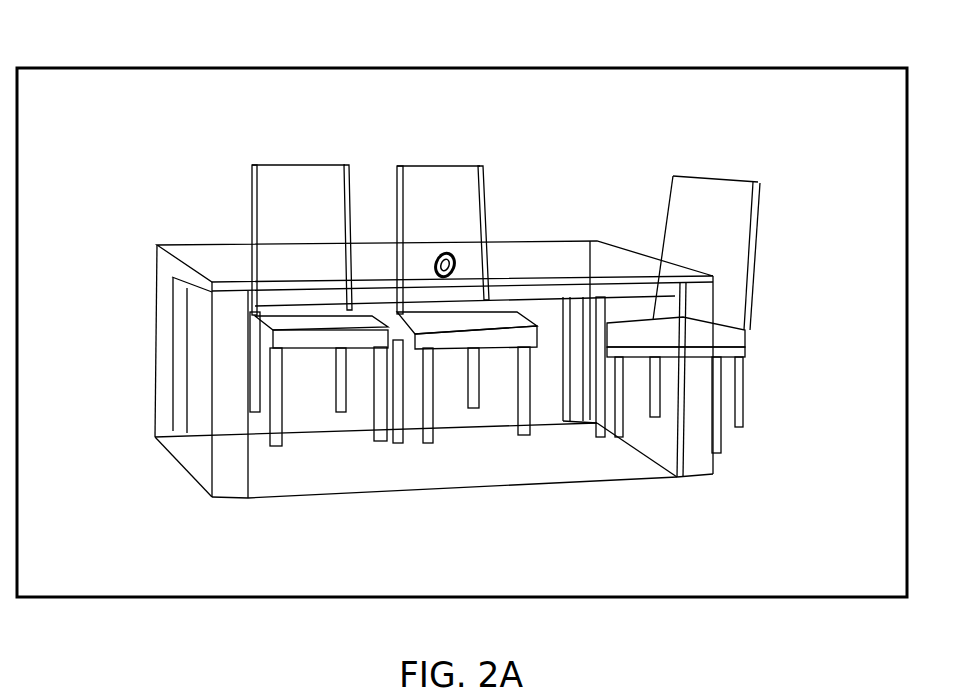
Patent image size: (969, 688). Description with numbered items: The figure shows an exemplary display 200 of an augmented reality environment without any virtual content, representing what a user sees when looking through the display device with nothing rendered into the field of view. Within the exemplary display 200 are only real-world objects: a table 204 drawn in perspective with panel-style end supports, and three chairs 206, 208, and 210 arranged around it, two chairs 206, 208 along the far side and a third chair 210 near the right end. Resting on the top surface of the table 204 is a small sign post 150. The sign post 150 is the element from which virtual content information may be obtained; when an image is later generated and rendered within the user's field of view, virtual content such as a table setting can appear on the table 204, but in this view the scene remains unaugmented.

The exemplary display 200 is at (162, 67).
The table 204 is at (717, 278).
The chair 206 is at (293, 160).
The chair 208 is at (435, 160).
The chair 210 is at (725, 172).
The sign post 150 is at (460, 253).